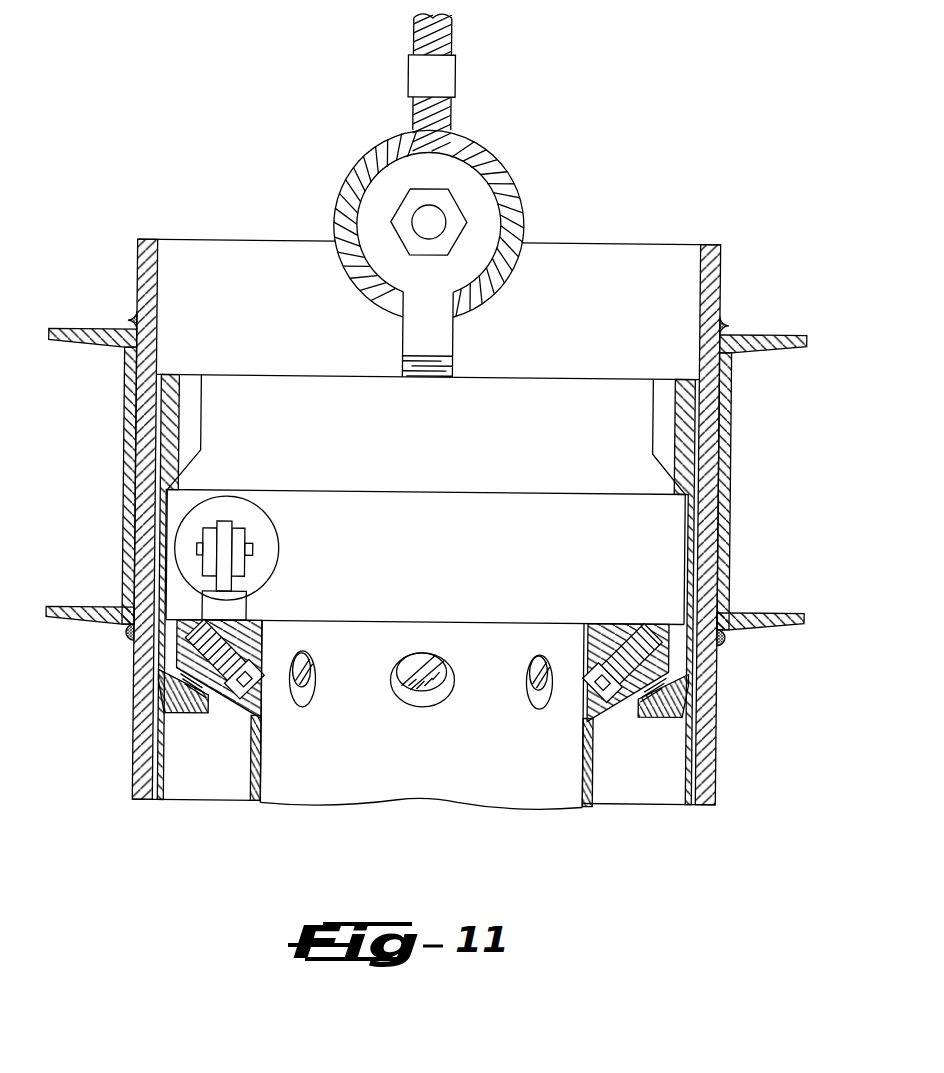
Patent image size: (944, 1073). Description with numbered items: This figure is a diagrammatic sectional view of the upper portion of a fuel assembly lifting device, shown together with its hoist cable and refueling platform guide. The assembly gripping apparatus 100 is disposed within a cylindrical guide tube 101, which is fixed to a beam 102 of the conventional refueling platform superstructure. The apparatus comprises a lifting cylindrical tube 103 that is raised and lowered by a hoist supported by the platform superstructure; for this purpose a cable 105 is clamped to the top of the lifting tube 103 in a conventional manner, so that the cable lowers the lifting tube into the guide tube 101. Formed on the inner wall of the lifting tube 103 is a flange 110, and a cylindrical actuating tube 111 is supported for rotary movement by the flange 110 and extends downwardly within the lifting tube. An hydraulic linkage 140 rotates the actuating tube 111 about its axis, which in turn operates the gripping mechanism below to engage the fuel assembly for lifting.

The assembly gripping apparatus 100 is at (120, 262).
The cylindrical guide tube 101 is at (716, 268).
The beam 102 is at (760, 336).
The lifting cylindrical tube 103 is at (164, 421).
The cable 105 is at (449, 42).
The flange 110 is at (190, 716).
The cylindrical actuating tube 111 is at (357, 622).
The hydraulic linkage 140 is at (250, 568).